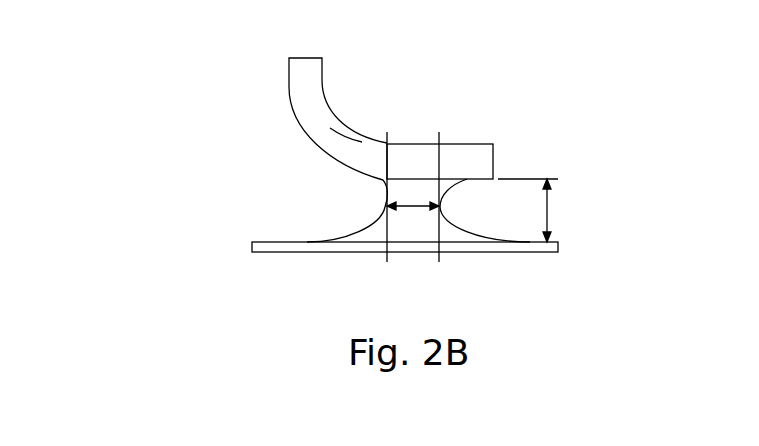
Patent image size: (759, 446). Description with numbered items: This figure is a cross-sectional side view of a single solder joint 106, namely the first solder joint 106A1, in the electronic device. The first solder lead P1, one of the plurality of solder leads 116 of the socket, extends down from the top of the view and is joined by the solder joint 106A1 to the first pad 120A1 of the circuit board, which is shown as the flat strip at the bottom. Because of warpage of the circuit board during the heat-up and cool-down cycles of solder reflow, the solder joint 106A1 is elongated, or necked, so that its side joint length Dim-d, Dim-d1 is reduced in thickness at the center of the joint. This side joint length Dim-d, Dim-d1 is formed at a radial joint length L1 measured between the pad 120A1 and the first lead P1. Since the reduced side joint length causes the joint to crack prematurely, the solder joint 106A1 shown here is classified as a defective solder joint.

The solder leads 116 is at (308, 102).
The first solder lead P1 is at (332, 130).
The solder joint 106 is at (353, 207).
The first solder joint 106A1 is at (370, 232).
The first pad 120A1 is at (492, 252).
The side joint length Dim-d is at (517, 147).
The side joint length of the first solder joint Dim-d1 is at (415, 203).
The radial joint length L1 is at (549, 212).